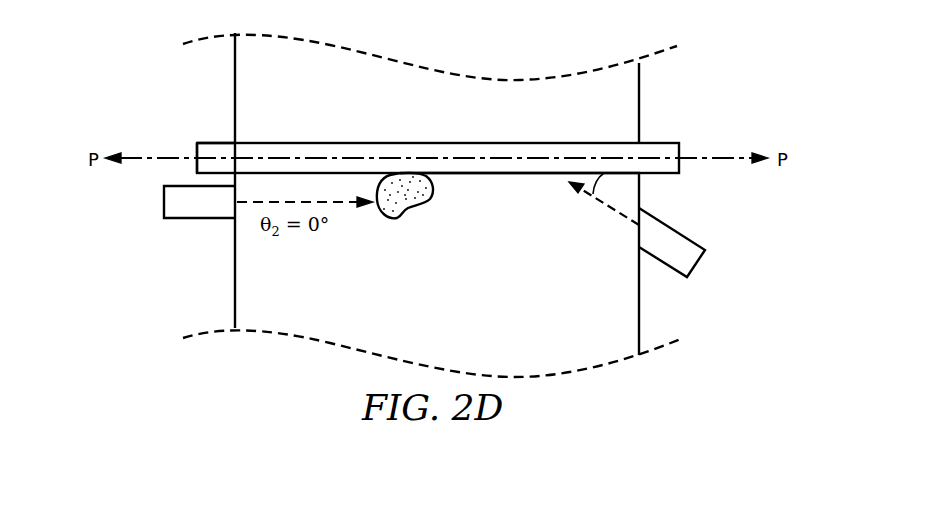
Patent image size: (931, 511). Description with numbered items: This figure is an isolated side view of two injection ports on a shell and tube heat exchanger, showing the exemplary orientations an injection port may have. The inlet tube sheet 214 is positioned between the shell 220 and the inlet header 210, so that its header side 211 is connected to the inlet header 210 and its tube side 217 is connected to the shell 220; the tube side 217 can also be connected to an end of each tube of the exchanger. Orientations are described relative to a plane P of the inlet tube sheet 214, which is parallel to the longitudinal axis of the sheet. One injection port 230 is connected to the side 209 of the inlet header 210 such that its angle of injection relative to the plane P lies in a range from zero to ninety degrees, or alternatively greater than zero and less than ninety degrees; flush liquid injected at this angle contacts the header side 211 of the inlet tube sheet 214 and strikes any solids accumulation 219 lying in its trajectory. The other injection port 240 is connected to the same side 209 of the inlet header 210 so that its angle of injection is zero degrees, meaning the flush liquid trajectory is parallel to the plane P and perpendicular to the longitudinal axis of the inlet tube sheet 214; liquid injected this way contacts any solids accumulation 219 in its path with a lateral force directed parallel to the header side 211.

The side 209 is at (235, 280).
The inlet header 210 is at (639, 295).
The header side 211 is at (465, 173).
The inlet tube sheet 214 is at (215, 143).
The tube side 217 is at (372, 143).
The solids accumulation 219 is at (405, 210).
The shell 220 is at (639, 104).
The injection port 230 is at (683, 233).
The injection port 240 is at (192, 218).